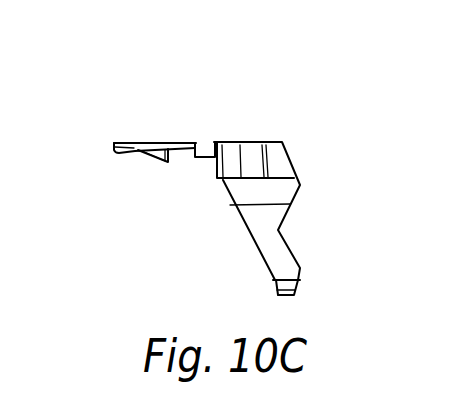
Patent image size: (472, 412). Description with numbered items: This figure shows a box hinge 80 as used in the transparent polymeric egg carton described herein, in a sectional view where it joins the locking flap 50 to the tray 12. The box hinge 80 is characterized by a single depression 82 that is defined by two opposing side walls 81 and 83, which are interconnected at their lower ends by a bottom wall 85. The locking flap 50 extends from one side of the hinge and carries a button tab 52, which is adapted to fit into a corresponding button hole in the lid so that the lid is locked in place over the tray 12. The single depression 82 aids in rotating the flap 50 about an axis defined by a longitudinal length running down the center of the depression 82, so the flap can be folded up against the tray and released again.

The tray 12 is at (333, 145).
The locking flap 50 is at (118, 143).
The button tab 52 is at (146, 163).
The box hinge 80 is at (176, 215).
The side wall 81 is at (200, 141).
The single depression 82 is at (194, 162).
The side wall 83 is at (212, 142).
The bottom wall 85 is at (207, 160).